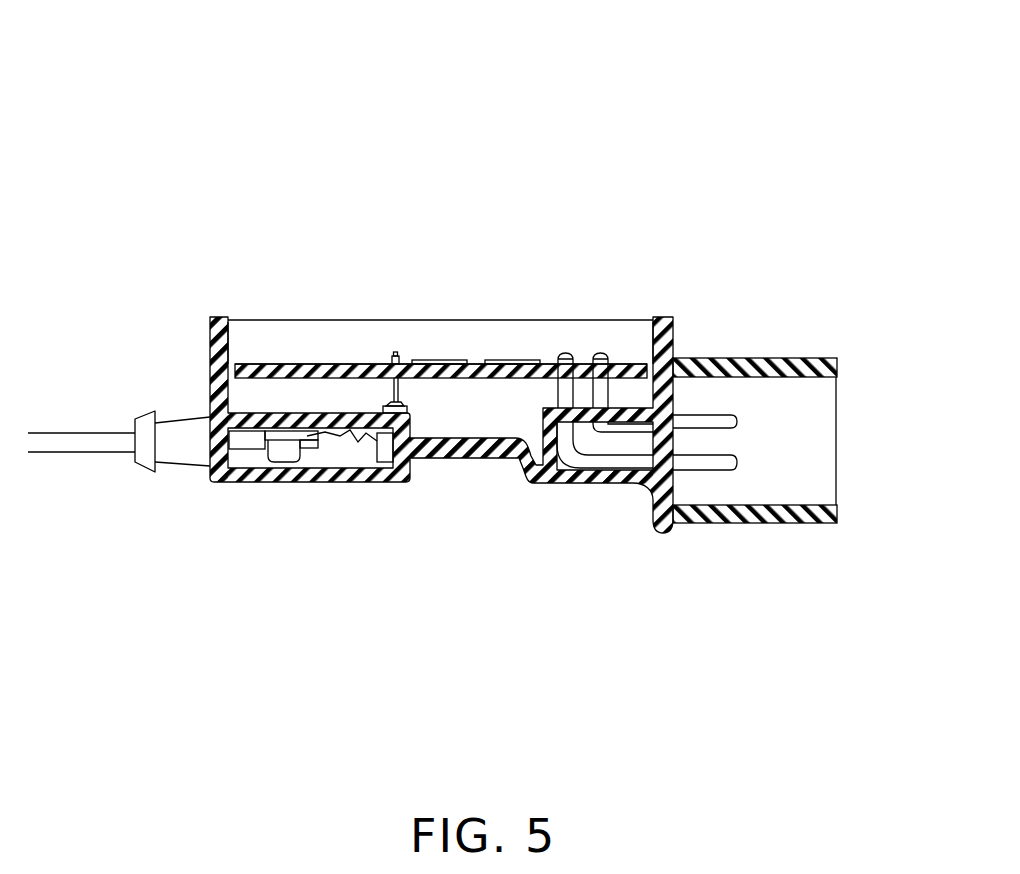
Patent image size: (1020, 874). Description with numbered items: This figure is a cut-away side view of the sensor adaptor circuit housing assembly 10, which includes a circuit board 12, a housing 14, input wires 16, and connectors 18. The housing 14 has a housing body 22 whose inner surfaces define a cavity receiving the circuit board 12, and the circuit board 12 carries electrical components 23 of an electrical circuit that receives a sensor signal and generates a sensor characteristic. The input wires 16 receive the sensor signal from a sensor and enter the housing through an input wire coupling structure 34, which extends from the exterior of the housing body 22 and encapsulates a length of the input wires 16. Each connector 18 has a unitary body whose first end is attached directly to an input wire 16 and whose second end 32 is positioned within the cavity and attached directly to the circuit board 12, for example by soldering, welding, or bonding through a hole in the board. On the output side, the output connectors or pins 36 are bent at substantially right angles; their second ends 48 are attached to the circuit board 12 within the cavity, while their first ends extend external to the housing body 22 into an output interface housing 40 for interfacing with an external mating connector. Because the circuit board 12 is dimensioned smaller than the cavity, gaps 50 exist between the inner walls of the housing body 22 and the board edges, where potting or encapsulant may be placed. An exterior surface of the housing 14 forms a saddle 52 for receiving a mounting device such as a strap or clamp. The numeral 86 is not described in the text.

The sensor adaptor circuit housing assembly 10 is at (348, 93).
The circuit board 12 is at (280, 365).
The housing 14 is at (320, 493).
The input wires 16 is at (80, 443).
The connectors 18 is at (390, 347).
The housing body 22 is at (220, 347).
The electrical components 23 is at (418, 358).
The second end of connector 32 is at (395, 352).
The input wire coupling structure 34 is at (178, 433).
The output connectors/pins 36 is at (682, 407).
The output interface housing 40 is at (822, 360).
The second ends of output connectors/pins 48 is at (565, 352).
The gaps 50 is at (237, 353).
The saddle 52 is at (470, 472).
The connector pins 86 is at (738, 423).